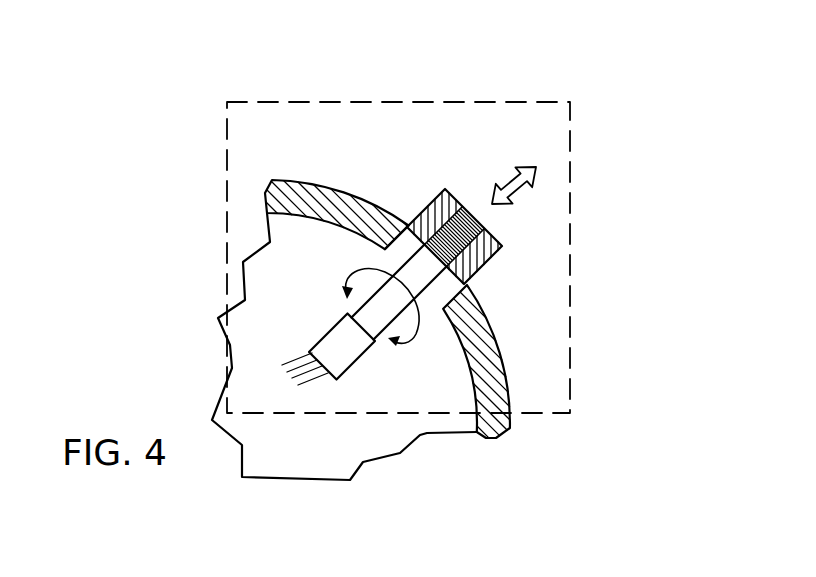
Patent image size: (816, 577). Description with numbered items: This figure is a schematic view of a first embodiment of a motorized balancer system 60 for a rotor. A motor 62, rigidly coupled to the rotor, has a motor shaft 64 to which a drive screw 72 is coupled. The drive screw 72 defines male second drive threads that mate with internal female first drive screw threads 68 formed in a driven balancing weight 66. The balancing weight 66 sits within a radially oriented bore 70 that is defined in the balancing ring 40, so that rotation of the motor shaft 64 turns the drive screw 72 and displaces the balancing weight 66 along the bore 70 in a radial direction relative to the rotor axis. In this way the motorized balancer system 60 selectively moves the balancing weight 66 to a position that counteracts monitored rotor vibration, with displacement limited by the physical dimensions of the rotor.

The balancing ring 40 is at (544, 432).
The motorized balancer system 60 is at (292, 92).
The motor 62 is at (340, 333).
The motor shaft 64 is at (382, 334).
The balancing weight 66 is at (495, 250).
The first drive screw threads 68 is at (496, 252).
The bore 70 is at (388, 241).
The drive screw 72 is at (464, 237).